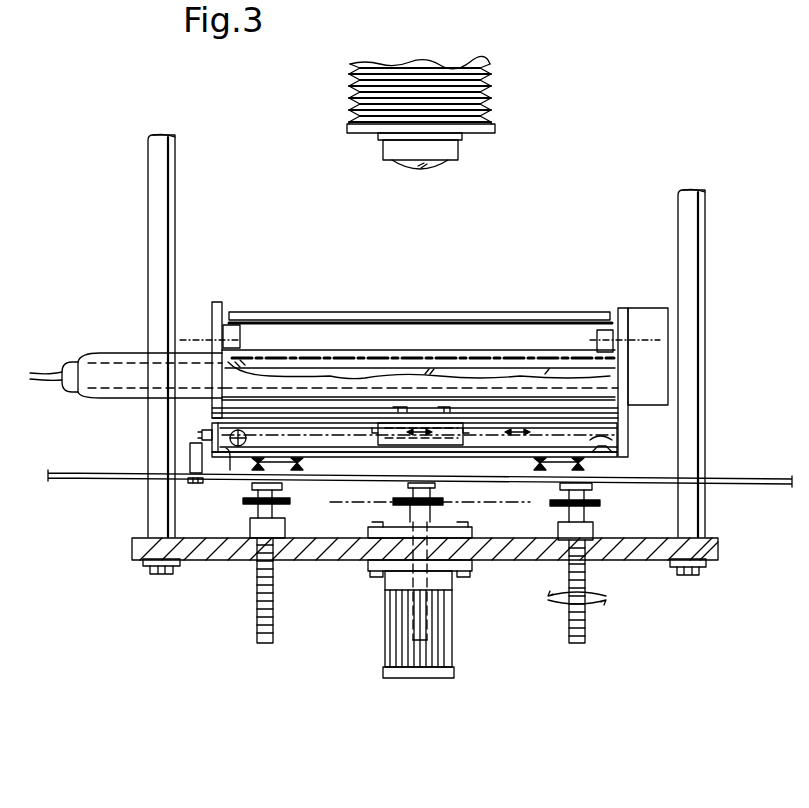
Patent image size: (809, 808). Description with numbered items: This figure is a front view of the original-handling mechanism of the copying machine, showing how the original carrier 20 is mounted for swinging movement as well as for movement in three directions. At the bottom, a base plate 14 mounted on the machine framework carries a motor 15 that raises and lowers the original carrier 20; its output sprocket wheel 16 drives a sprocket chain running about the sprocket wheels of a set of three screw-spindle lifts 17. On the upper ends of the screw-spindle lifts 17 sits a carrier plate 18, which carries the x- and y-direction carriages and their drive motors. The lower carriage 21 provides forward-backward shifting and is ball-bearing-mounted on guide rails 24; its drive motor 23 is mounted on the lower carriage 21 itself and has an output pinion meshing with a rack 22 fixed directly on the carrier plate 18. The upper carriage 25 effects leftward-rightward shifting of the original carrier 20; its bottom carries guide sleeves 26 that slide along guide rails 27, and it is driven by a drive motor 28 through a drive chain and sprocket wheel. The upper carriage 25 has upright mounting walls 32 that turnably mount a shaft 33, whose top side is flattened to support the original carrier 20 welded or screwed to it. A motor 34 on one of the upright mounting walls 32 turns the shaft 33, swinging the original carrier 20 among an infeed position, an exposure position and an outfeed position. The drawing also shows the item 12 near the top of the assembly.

The work table carriage 12 is at (488, 304).
The base plate 14 is at (621, 560).
The motor 15 is at (454, 656).
The output sprocket wheel 16 is at (400, 504).
The screw-spindle lifts 17 is at (262, 608).
The carrier plate 18 is at (718, 479).
The original carrier 20 is at (270, 312).
The lower carriage 21 is at (620, 432).
The rack 22 is at (196, 473).
The drive motor 23 is at (228, 450).
The guide rails 24 is at (300, 470).
The upper carriage 25 is at (205, 398).
The guide sleeves 26 is at (460, 442).
The guide rails 27 is at (312, 433).
The drive motor 28 is at (608, 452).
The upright mounting walls 32 is at (216, 302).
The shaft 33 is at (370, 333).
The motor 34 is at (640, 318).